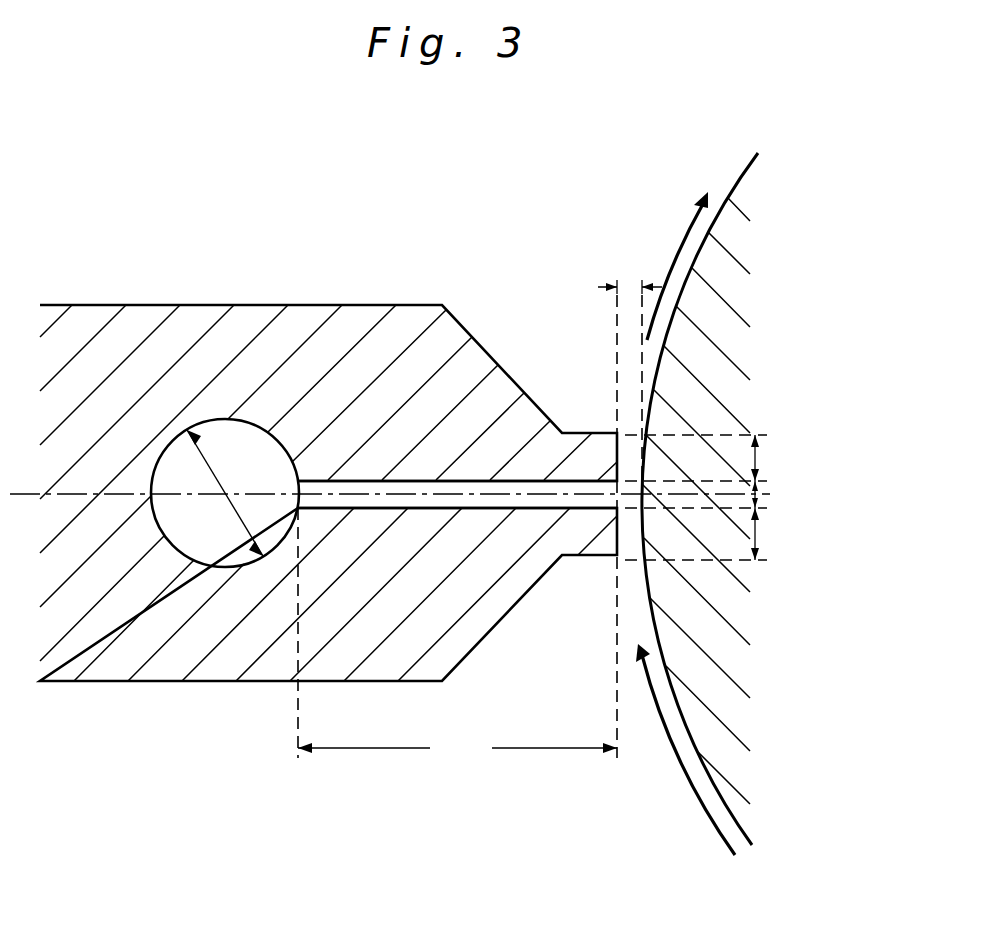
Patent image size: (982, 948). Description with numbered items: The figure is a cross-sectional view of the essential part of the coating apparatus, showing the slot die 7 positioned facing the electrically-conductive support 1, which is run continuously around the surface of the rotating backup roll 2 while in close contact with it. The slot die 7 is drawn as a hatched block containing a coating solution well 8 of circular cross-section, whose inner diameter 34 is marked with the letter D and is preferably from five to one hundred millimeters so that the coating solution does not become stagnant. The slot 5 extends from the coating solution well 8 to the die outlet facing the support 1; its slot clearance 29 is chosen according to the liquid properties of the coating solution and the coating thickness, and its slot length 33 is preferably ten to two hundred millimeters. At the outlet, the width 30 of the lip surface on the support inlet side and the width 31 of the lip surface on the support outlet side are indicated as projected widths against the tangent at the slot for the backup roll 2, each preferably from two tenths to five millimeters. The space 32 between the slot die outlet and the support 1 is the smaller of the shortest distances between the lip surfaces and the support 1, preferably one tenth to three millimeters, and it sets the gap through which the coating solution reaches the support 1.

The electrically-conductive support 1 is at (729, 197).
The backup roll 2 is at (757, 198).
The slot 5 is at (422, 492).
The slot die 7 is at (348, 345).
The coating solution well 8 is at (200, 418).
The slot clearance 29 is at (797, 494).
The width of the lip surface on the support inlet side 30 is at (797, 538).
The width of the lip surface on the support outlet side 31 is at (797, 454).
The space between the slot die outlet and the support 32 is at (625, 242).
The slot length 33 is at (472, 727).
The inner diameter 34 is at (242, 450).